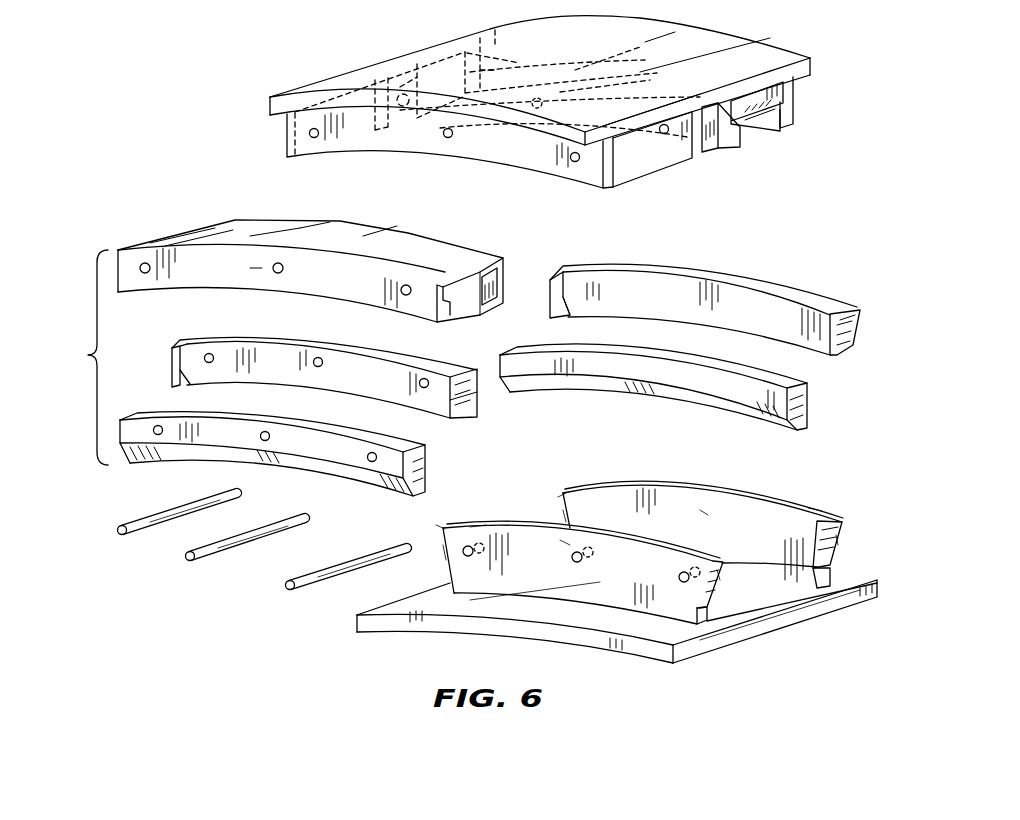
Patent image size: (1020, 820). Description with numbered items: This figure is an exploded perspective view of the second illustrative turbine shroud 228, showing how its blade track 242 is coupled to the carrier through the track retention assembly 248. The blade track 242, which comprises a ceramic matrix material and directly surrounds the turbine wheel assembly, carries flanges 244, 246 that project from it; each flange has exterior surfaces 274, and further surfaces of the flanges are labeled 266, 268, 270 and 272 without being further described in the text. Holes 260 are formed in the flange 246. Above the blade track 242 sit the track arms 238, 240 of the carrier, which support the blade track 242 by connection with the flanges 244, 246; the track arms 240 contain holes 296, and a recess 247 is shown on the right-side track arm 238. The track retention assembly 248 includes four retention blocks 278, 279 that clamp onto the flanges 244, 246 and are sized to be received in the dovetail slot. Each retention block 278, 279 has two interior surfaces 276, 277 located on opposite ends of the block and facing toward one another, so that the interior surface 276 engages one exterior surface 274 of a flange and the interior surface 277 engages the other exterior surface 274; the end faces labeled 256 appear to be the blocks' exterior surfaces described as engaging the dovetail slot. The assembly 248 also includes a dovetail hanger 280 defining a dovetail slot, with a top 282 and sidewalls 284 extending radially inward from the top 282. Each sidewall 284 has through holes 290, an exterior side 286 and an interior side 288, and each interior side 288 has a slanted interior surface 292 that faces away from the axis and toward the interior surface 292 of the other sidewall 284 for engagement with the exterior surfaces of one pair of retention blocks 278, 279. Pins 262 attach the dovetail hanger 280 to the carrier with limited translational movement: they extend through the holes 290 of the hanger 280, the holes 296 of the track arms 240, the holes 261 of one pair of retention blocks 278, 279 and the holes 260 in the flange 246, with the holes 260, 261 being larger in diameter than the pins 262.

The turbine shroud 228 is at (229, 72).
The track arm 238 is at (792, 95).
The track arm 240 is at (612, 192).
The blade track 242 is at (794, 632).
The flange 244 is at (684, 511).
The flange 246 is at (563, 582).
The recess 247 is at (760, 108).
The track retention assembly 248 is at (77, 357).
The end face 256 is at (852, 347).
The holes 260 is at (485, 549).
The holes 261 is at (218, 358).
The pins 262 is at (122, 540).
The plate face 266 is at (565, 546).
The upper edge 268 is at (476, 515).
The top edge 270 is at (434, 527).
The foot 272 is at (712, 613).
The exterior surface 274 is at (440, 551).
The interior surface 276 is at (190, 371).
The interior surface 277 is at (826, 338).
The retention block 278 is at (534, 348).
The retention block 279 is at (210, 341).
The dovetail hanger 280 is at (234, 240).
The top 282 is at (412, 246).
The sidewall 284 is at (510, 272).
The exterior side 286 is at (518, 262).
The interior side 288 is at (473, 304).
The through holes 290 is at (146, 262).
The interior surface 292 is at (448, 298).
The holes 296 is at (548, 103).